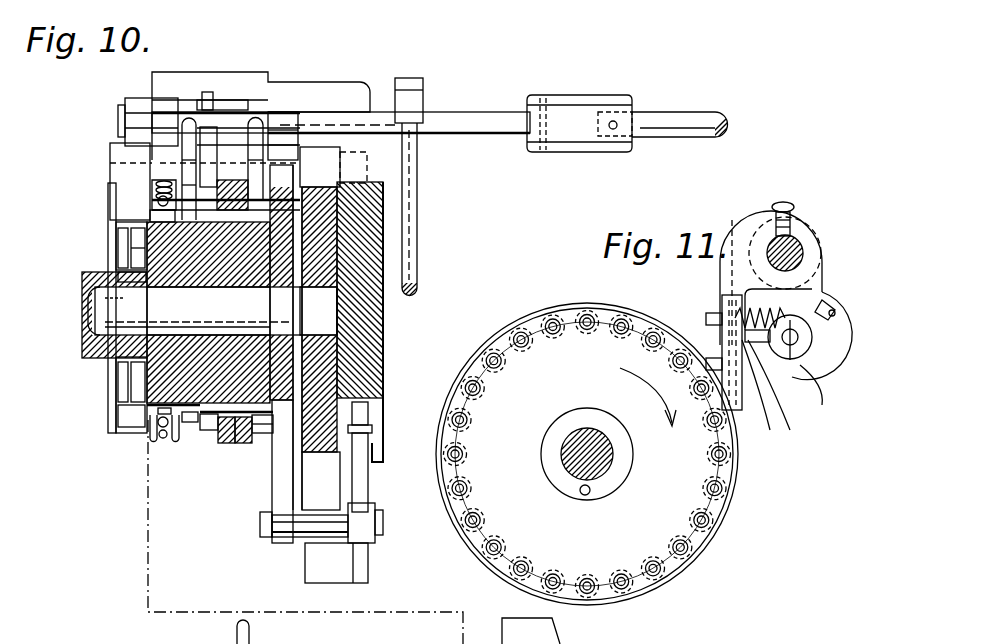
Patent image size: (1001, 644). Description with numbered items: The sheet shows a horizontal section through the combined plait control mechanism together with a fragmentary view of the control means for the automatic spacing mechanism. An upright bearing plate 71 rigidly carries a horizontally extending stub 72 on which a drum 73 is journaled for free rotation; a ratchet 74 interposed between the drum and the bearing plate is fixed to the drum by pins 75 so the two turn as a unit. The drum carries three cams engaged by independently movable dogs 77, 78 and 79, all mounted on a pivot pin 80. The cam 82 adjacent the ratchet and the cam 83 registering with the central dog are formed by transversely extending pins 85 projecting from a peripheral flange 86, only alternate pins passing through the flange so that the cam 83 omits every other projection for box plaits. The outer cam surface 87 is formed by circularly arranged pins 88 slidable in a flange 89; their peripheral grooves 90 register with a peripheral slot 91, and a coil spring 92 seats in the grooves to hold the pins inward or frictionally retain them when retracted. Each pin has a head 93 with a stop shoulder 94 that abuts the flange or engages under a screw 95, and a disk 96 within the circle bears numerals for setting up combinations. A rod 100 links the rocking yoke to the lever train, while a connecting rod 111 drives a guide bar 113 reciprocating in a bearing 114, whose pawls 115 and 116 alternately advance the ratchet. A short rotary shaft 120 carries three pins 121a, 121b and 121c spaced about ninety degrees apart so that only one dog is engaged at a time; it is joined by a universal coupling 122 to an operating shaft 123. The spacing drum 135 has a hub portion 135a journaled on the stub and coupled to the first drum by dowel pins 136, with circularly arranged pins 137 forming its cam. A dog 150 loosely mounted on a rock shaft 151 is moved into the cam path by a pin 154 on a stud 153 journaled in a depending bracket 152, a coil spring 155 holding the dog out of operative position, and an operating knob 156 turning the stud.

In FIG. 10, the upright bearing plate 71 is at (325, 250).
In FIG. 10, the stub 72 is at (118, 298).
In FIG. 11, the stub 72 is at (612, 450).
In FIG. 10, the drum 73 is at (128, 425).
In FIG. 10, the ratchet 74 is at (290, 365).
In FIG. 10, the pins 75 is at (345, 212).
In FIG. 10, the dog 77 is at (283, 120).
In FIG. 10, the dog 78 is at (228, 165).
In FIG. 10, the dog 79 is at (190, 135).
In FIG. 10, the pivot pin 80 is at (254, 122).
In FIG. 10, the cam 82 is at (263, 435).
In FIG. 10, the cam 83 is at (213, 432).
In FIG. 10, the pins 85 is at (282, 210).
In FIG. 10, the peripheral flange 86 is at (243, 445).
In FIG. 10, the cam surface 87 is at (190, 424).
In FIG. 10, the pins 88 is at (162, 185).
In FIG. 10, the flange 89 is at (152, 440).
In FIG. 10, the peripheral grooves 90 is at (155, 205).
In FIG. 10, the peripheral slot 91 is at (176, 442).
In FIG. 10, the coil spring 92 is at (163, 440).
In FIG. 10, the heads 93 is at (108, 235).
In FIG. 10, the stop shoulder 94 is at (118, 262).
In FIG. 10, the screw 95 is at (108, 244).
In FIG. 10, the disk 96 is at (115, 272).
In FIG. 10, the rod 100 is at (417, 262).
In FIG. 10, the connecting rod 111 is at (366, 473).
In FIG. 10, the guide bar 113 is at (360, 305).
In FIG. 10, the bearing 114 is at (380, 322).
In FIG. 10, the pawl 115 is at (283, 485).
In FIG. 10, the pawl 116 is at (330, 187).
In FIG. 10, the rotary shaft 120 is at (450, 113).
In FIG. 10, the pin 121a is at (190, 128).
In FIG. 10, the pin 121b is at (213, 92).
In FIG. 10, the pin 121c is at (280, 115).
In FIG. 10, the universal coupling 122 is at (578, 110).
In FIG. 10, the operating shaft 123 is at (685, 120).
In FIG. 11, the drum 135 is at (700, 525).
In FIG. 11, the hub portion 135a is at (618, 478).
In FIG. 10, the dowel pins 136 is at (115, 312).
In FIG. 11, the dowel pins 136 is at (587, 494).
In FIG. 11, the pins 137 is at (476, 528).
In FIG. 11, the dog 150 is at (735, 270).
In FIG. 11, the rock shaft 151 is at (792, 240).
In FIG. 11, the depending bracket 152 is at (774, 310).
In FIG. 11, the stud 153 is at (790, 360).
In FIG. 11, the pin 154 is at (752, 400).
In FIG. 11, the coil spring 155 is at (740, 300).
In FIG. 11, the operating knob 156 is at (817, 358).